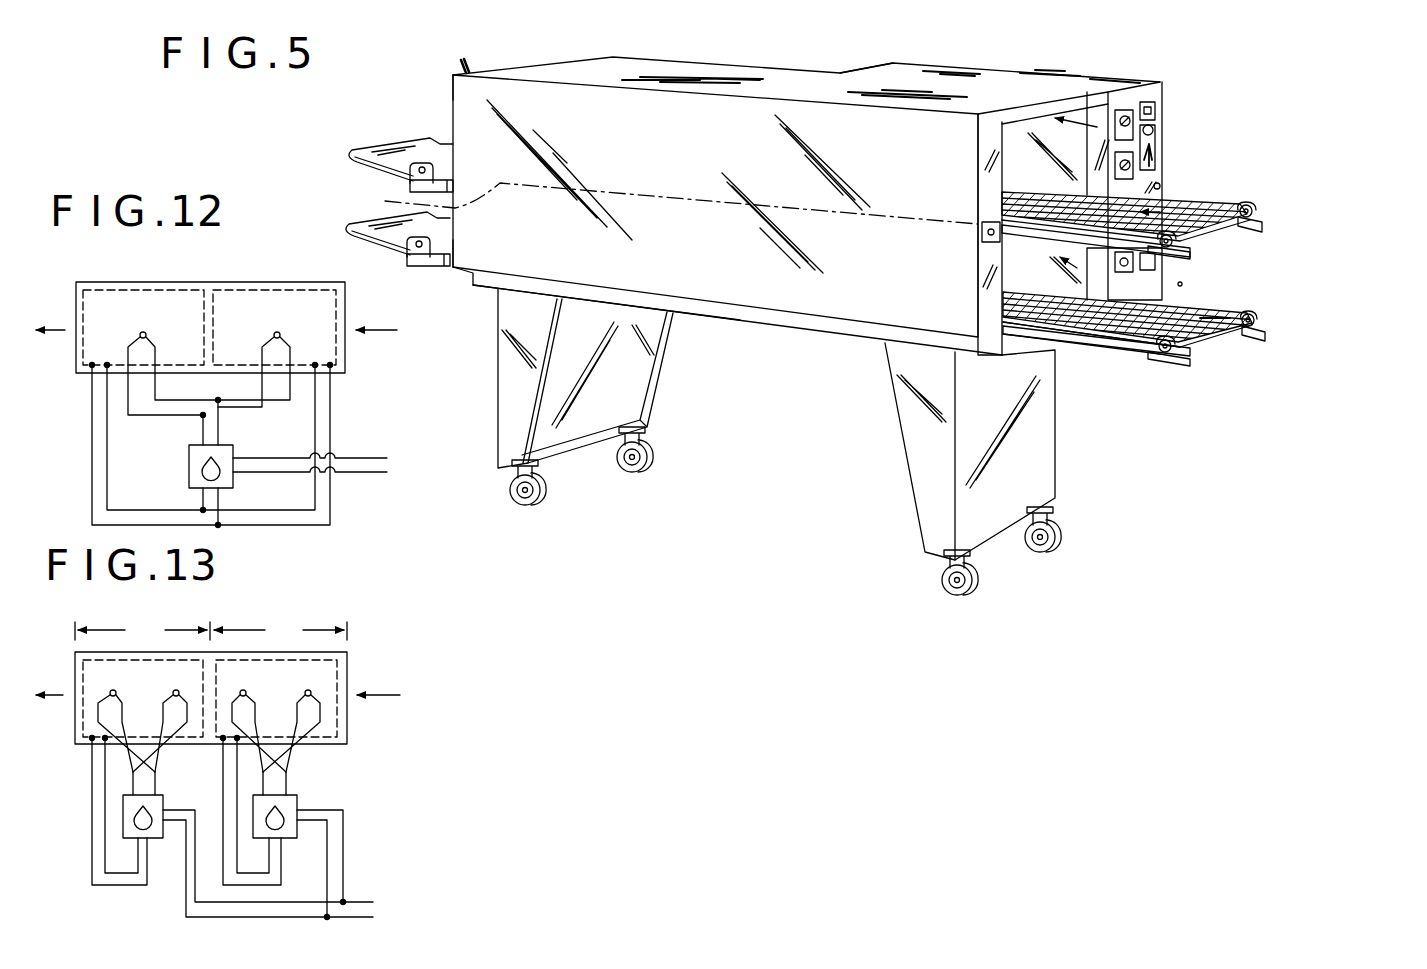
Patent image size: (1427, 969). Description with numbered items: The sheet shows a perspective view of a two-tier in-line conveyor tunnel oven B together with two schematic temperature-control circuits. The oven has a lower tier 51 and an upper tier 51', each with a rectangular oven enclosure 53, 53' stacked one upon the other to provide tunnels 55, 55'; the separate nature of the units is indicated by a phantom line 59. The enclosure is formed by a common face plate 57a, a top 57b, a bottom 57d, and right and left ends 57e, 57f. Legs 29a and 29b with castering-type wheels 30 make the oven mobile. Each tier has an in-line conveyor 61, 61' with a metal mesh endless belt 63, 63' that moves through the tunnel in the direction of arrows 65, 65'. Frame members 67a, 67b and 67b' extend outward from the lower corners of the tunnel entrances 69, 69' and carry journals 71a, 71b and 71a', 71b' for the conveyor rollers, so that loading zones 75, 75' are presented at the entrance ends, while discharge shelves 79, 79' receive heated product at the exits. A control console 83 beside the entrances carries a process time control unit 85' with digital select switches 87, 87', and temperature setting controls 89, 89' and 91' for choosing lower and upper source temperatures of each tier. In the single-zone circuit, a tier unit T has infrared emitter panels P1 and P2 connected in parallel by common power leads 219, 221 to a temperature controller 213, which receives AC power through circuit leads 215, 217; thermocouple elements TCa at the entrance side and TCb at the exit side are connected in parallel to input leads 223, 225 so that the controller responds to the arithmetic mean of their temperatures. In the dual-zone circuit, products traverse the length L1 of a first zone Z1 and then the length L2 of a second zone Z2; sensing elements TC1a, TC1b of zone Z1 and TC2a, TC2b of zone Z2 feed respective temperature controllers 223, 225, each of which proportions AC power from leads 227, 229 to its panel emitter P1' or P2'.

In FIG. 5, the leg 29a is at (912, 497).
In FIG. 5, the leg 29b is at (497, 402).
In FIG. 5, the castering-type wheels 30 is at (640, 484).
In FIG. 5, the tier 51 is at (434, 273).
In FIG. 5, the tier 51' is at (409, 72).
In FIG. 5, the rectangular oven enclosure 53 is at (806, 242).
In FIG. 5, the rectangular oven enclosure 53' is at (853, 51).
In FIG. 5, the tunnel 55 is at (1161, 282).
In FIG. 5, the tunnel 55' is at (1189, 102).
In FIG. 5, the face plate 57a is at (783, 292).
In FIG. 5, the top 57b is at (800, 40).
In FIG. 5, the bottom 57d is at (868, 357).
In FIG. 5, the right end 57e is at (1156, 140).
In FIG. 5, the left end 57f is at (462, 62).
In FIG. 5, the phantom line 59 is at (390, 202).
In FIG. 5, the in-line conveyor 61 is at (1128, 361).
In FIG. 5, the in-line conveyor 61' is at (1137, 229).
In FIG. 5, the endless belt 63 is at (1277, 332).
In FIG. 5, the endless belt 63' is at (1289, 204).
In FIG. 5, the arrow 65 is at (1096, 368).
In FIG. 5, the arrow 65' is at (1149, 218).
In FIG. 5, the frame member 67a is at (1135, 357).
In FIG. 5, the frame member 67b is at (1243, 367).
In FIG. 5, the frame member 67b' is at (1279, 243).
In FIG. 5, the tunnel entrance 69 is at (965, 254).
In FIG. 5, the tunnel entrance 69' is at (1051, 79).
In FIG. 5, the journal 71a is at (1180, 385).
In FIG. 5, the journal 71a' is at (1212, 260).
In FIG. 5, the journal 71b is at (1284, 344).
In FIG. 5, the journal 71b' is at (1309, 218).
In FIG. 5, the on-loading zone 75 is at (1345, 294).
In FIG. 5, the loading zone 75' is at (1335, 145).
In FIG. 5, the discharge shelf 79 is at (373, 233).
In FIG. 5, the heated product discharge shelf 79' is at (379, 153).
In FIG. 5, the control console 83 is at (1162, 82).
In FIG. 5, the process time control unit 85' is at (1194, 121).
In FIG. 5, the digital select switches 87 is at (1218, 237).
In FIG. 5, the digital select switches 87' is at (1181, 110).
In FIG. 5, the temperature setting control 89 is at (1253, 317).
In FIG. 5, the temperature setting control 89' is at (1203, 159).
In FIG. 5, the temperature setting control 91' is at (1130, 86).
In FIG. 5, the multiple tier oven B is at (480, 294).
In FIG. 12, the tier unit T is at (272, 260).
In FIG. 12, the infrared emitter panel P1 is at (275, 307).
In FIG. 12, the infrared emitter panel P2 is at (143, 307).
In FIG. 12, the thermocouple element TCa is at (274, 334).
In FIG. 12, the thermocouple element TCb is at (140, 334).
In FIG. 12, the temperature controller 213 is at (189, 463).
In FIG. 12, the circuit lead 215 is at (352, 458).
In FIG. 12, the circuit lead 217 is at (352, 472).
In FIG. 12, the common power lead 219 is at (170, 511).
In FIG. 12, the common power lead 221 is at (248, 525).
In FIG. 12, the input lead / temperature controller 223 is at (200, 427).
In FIG. 13, the input lead / temperature controller 223 is at (297, 805).
In FIG. 12, the input lead / temperature controller 225 is at (220, 428).
In FIG. 13, the input lead / temperature controller 225 is at (163, 805).
In FIG. 13, the AC power lead 227 is at (366, 902).
In FIG. 13, the AC power lead 229 is at (366, 917).
In FIG. 13, the first zone Z1 is at (350, 651).
In FIG. 13, the second zone Z2 is at (72, 652).
In FIG. 13, the length of first zone L1 is at (280, 631).
In FIG. 13, the length of second zone L2 is at (142, 631).
In FIG. 13, the infrared panel emitter P1' is at (312, 698).
In FIG. 13, the infrared panel emitter P2' is at (146, 665).
In FIG. 13, the sensing element TC1a is at (305, 692).
In FIG. 13, the sensing element TC1b is at (256, 688).
In FIG. 13, the sensing element TC2a is at (185, 688).
In FIG. 13, the sensing element TC2b is at (122, 688).